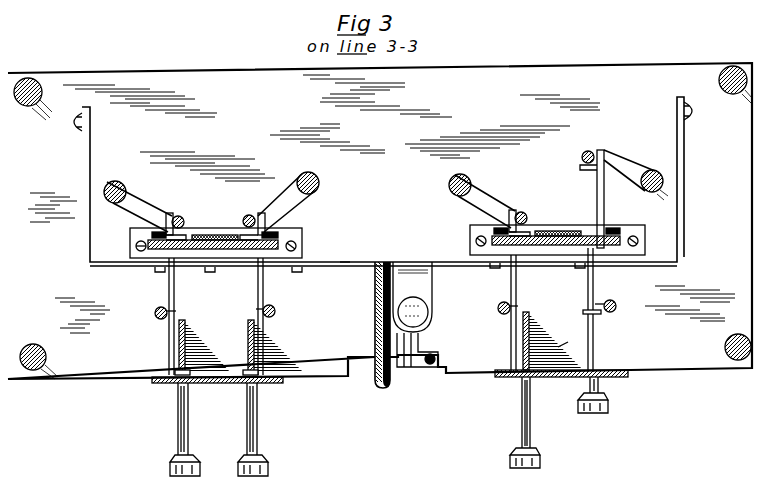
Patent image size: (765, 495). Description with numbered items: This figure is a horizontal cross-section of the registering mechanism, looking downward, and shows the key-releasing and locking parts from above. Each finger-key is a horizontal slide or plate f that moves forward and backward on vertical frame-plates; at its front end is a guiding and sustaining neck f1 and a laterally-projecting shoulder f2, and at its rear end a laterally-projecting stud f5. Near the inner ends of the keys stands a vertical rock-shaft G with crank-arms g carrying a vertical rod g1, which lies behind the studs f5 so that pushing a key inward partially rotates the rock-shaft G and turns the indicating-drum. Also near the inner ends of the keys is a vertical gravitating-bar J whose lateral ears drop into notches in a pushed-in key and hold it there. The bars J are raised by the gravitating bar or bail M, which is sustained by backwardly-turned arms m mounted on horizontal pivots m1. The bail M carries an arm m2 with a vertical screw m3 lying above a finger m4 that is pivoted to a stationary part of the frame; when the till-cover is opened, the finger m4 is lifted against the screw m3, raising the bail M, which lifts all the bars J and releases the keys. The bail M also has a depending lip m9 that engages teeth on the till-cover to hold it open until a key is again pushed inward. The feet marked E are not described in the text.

The backwardly-turned arm m is at (84, 220).
The horizontal pivot m1 is at (72, 122).
The gravitating-bar J is at (130, 240).
The laterally-projecting stud f5 is at (228, 236).
The vertical rod g1 is at (180, 214).
The crank-arm g is at (381, 191).
The vertical rock-shaft G is at (116, 181).
The horizontal slide or plate f is at (174, 292).
The laterally-projecting shoulder f2 is at (175, 371).
The guiding and sustaining neck f1 is at (189, 404).
The foot E is at (238, 466).
The bail M is at (348, 262).
The depending lip m9 is at (375, 320).
The arm m2 is at (426, 294).
The vertical screw m3 is at (413, 312).
The finger m4 is at (412, 340).